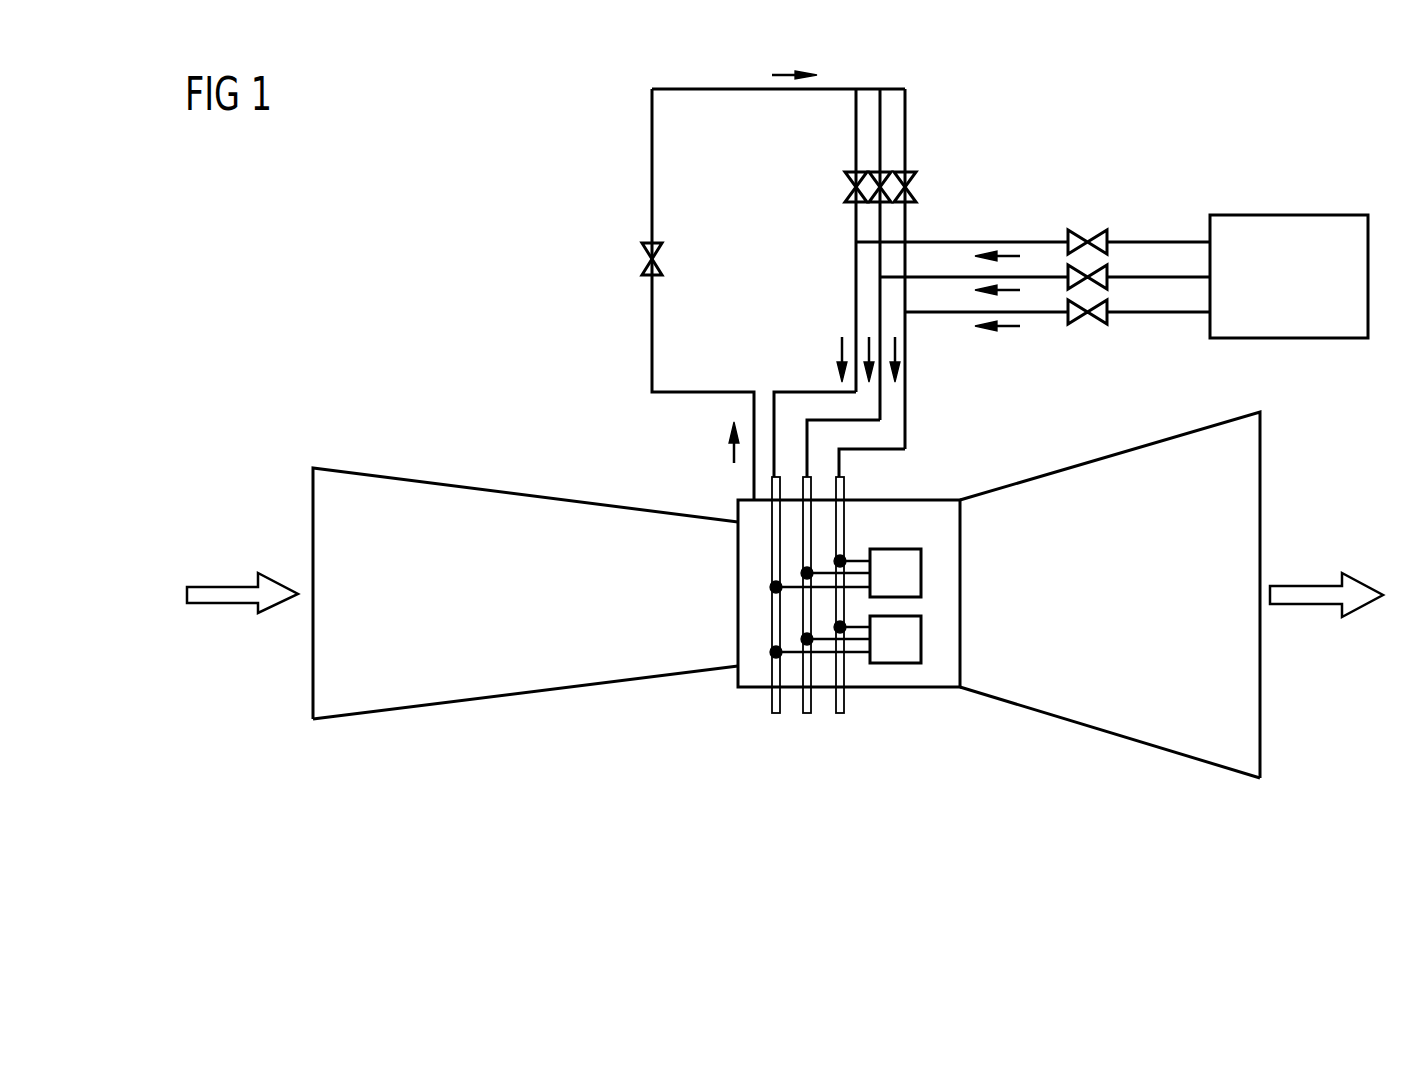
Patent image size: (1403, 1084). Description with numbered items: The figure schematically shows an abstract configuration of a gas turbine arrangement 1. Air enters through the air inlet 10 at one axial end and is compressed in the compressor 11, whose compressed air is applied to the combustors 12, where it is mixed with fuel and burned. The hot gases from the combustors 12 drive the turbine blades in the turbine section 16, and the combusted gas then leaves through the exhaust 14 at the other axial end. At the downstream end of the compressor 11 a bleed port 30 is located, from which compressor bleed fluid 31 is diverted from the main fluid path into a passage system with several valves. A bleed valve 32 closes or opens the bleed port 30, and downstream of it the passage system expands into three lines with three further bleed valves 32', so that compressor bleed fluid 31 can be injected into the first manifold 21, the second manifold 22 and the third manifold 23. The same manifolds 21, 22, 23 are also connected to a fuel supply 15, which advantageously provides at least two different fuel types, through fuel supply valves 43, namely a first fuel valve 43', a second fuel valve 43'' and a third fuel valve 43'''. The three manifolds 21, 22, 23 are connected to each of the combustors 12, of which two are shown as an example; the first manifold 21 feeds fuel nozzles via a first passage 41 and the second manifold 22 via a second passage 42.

The gas turbine arrangement 1 is at (358, 237).
The air inlet 10 is at (303, 491).
The compressor 11 is at (480, 700).
The combustor 12 is at (910, 664).
The exhaust 14 is at (1275, 441).
The fuel supply 15 is at (1288, 215).
The turbine section 16 is at (1108, 735).
The first manifold 21 is at (776, 713).
The second manifold 22 is at (808, 713).
The third manifold 23 is at (840, 713).
The bleed port 30 is at (752, 491).
The compressor bleed fluid 31 is at (733, 452).
The bleed valve 32 is at (668, 294).
The further bleed valves 32' is at (842, 260).
The first passage 41 is at (862, 662).
The second passage 42 is at (855, 570).
The fuel supply valves 43 is at (1033, 236).
The first fuel valve 43' is at (1087, 211).
The second fuel valve 43'' is at (1130, 315).
The third fuel valve 43''' is at (1088, 343).